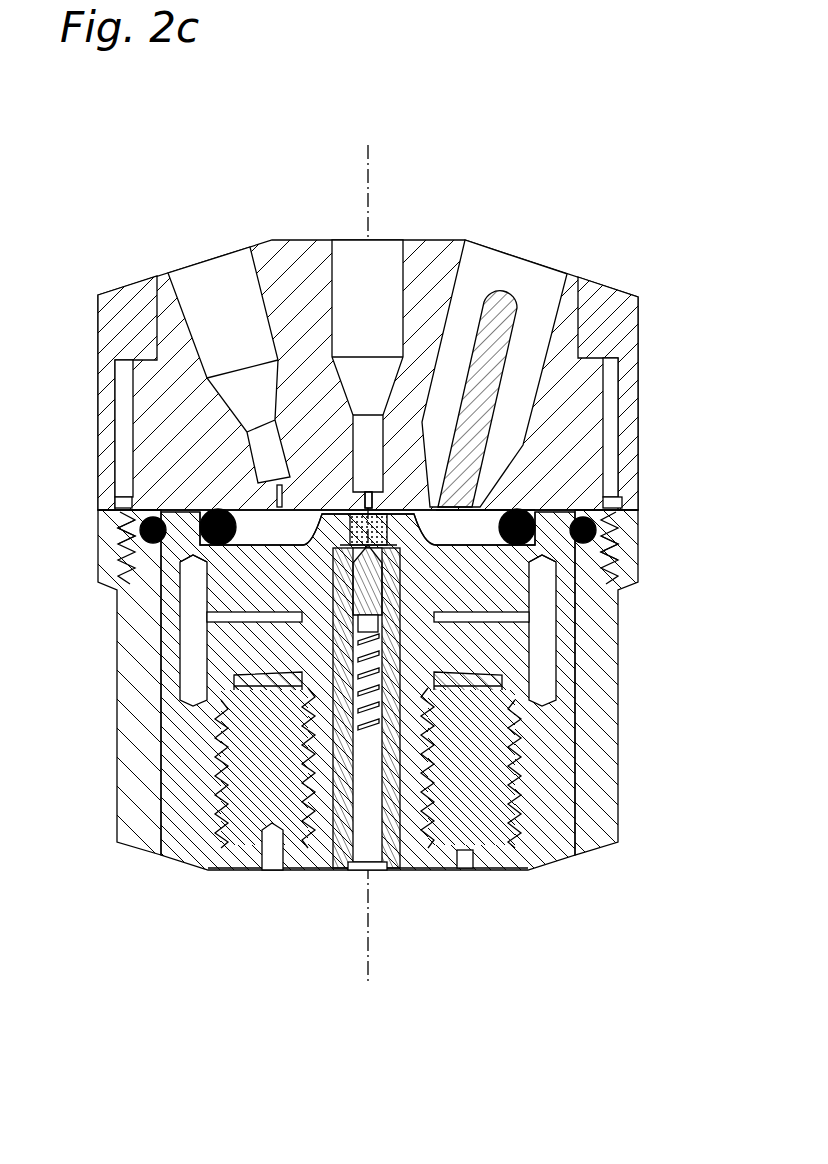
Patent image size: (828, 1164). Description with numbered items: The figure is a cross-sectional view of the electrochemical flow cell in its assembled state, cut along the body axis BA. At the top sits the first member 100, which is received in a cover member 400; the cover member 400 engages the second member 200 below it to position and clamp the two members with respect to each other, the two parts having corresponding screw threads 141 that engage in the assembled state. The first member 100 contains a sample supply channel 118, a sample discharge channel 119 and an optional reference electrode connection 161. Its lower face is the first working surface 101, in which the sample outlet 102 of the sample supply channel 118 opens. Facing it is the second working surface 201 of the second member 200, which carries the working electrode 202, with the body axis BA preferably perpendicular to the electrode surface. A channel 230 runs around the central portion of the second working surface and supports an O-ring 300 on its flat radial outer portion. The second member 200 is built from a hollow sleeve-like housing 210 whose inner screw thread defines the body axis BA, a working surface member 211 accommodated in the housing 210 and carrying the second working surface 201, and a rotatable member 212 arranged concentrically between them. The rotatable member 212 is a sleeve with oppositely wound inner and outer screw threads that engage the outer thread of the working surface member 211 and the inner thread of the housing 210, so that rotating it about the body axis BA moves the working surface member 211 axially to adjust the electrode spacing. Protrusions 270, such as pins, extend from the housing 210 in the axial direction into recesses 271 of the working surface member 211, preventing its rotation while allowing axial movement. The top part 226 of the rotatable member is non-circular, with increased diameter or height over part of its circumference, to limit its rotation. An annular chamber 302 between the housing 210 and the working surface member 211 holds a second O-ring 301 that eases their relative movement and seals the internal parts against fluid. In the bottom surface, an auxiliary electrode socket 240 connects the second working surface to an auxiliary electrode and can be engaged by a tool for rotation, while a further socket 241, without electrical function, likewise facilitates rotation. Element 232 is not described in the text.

The first member 100 is at (178, 340).
The cover member 400 is at (617, 303).
The sample discharge channel 119 is at (213, 300).
The sample supply channel 118 is at (385, 270).
The reference electrode connection 161 is at (518, 282).
The working electrode 202 is at (287, 485).
The housing 210 is at (590, 713).
The working surface member 211 is at (507, 585).
The protrusions 270 is at (190, 650).
The recesses 271 is at (192, 572).
The top part of the rotatable member 226 is at (247, 732).
The rotatable member 212 is at (490, 850).
The further socket 241 is at (272, 858).
The auxiliary electrode socket 240 is at (463, 860).
The second member 200 is at (405, 910).
The O-ring 300 is at (205, 518).
The sealing ring 232 is at (177, 522).
The channel 230 is at (257, 520).
The second O-ring 301 is at (130, 530).
The annular chamber 302 is at (128, 552).
The screw thread 141 is at (605, 550).
The first working surface 101 is at (210, 575).
The sample outlet 102 is at (380, 497).
The second working surface 201 is at (495, 510).
The body axis BA is at (370, 152).